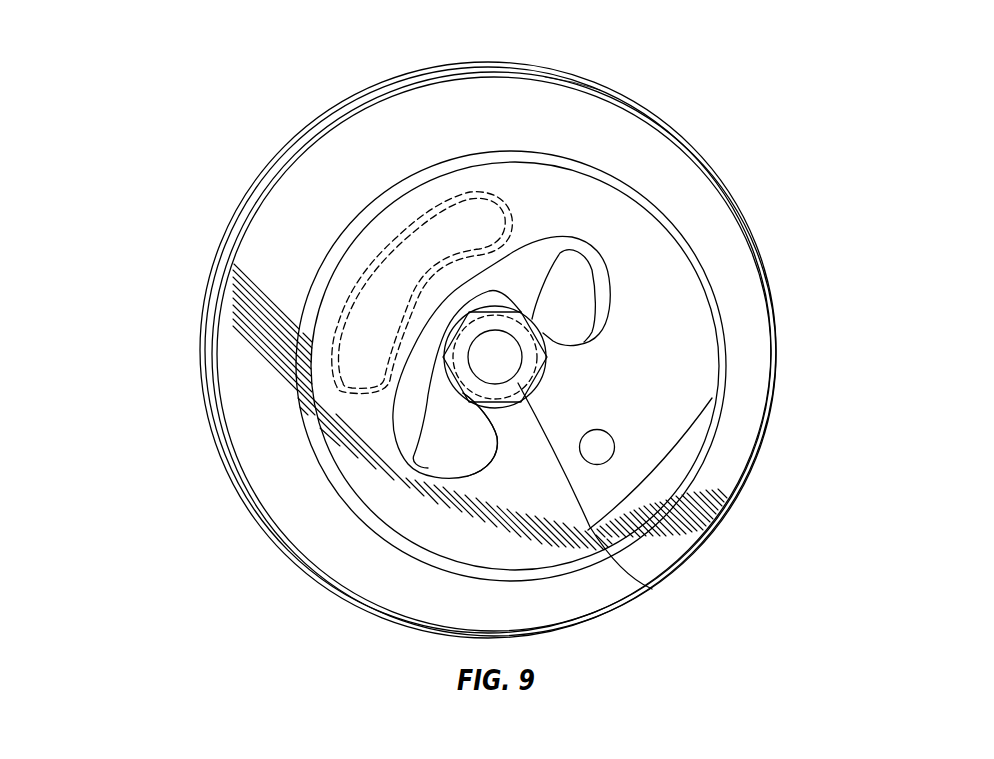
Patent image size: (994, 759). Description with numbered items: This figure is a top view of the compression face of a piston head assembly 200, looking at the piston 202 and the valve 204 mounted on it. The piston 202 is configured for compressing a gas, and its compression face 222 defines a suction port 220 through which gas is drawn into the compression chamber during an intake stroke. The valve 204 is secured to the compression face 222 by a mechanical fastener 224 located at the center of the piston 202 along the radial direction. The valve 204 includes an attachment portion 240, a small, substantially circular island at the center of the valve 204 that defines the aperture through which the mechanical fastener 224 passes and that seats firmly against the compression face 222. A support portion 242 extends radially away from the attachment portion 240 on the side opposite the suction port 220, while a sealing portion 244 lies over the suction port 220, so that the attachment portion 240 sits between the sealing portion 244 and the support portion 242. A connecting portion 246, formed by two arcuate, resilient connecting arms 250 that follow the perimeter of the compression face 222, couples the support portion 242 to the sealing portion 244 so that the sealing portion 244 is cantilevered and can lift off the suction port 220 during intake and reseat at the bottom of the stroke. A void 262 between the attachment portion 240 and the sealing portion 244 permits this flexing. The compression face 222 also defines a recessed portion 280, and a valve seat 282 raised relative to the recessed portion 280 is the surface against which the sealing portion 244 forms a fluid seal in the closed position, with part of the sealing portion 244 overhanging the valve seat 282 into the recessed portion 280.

The piston head assembly 200 is at (124, 236).
The piston 202 is at (565, 112).
The valve 204 is at (690, 328).
The suction port 220 is at (358, 345).
The compression face 222 is at (509, 100).
The mechanical fastener 224 is at (650, 588).
The attachment portion 240 is at (568, 360).
The support portion 242 is at (648, 429).
The sealing portion 244 is at (425, 192).
The connecting portion 246 is at (366, 505).
The connecting arms 250 is at (632, 222).
The void 262 is at (431, 440).
The recessed portion 280 is at (392, 416).
The valve seat 282 is at (343, 257).